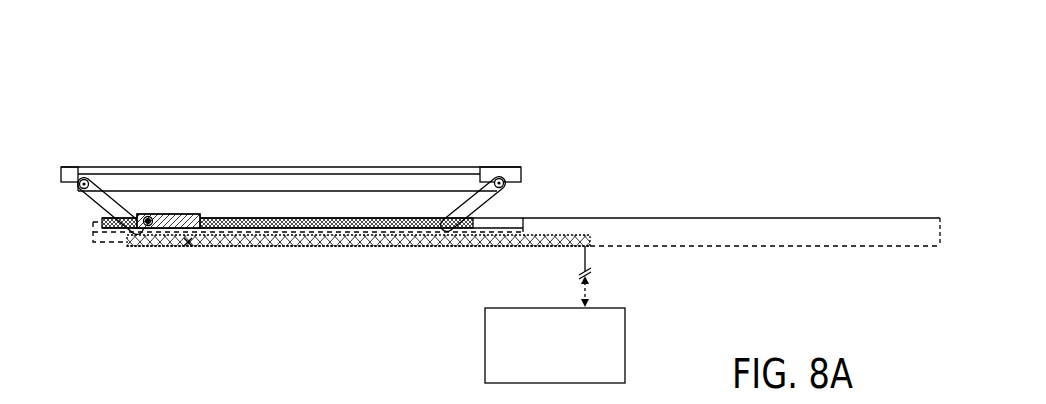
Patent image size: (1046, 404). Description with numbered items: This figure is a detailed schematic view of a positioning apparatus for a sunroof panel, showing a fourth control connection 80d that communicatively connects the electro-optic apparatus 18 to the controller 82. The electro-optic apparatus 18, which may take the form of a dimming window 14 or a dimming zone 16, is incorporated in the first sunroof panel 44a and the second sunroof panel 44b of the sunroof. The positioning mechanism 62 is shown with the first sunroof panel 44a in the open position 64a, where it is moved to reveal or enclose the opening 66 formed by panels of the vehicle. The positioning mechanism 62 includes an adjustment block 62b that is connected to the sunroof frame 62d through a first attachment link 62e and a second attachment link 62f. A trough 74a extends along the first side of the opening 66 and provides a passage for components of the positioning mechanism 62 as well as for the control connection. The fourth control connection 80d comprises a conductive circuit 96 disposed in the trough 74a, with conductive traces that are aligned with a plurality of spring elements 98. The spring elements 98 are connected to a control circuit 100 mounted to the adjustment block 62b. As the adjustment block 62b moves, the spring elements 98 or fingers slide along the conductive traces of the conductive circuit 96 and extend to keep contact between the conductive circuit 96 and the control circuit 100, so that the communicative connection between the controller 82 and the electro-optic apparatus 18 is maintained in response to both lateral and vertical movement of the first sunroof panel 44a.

The dimming window 14 is at (285, 153).
The dimming zone 16 is at (285, 153).
The electro-optic apparatus 18 is at (265, 215).
The control circuit 100 is at (165, 213).
The first attachment link 62e is at (113, 167).
The first sunroof panel 44a is at (300, 63).
The sunroof frame 62d is at (291, 118).
The second attachment link 62f is at (477, 167).
The positioning mechanism 62 is at (481, 185).
The open position 64a is at (481, 185).
The opening 66 is at (737, 232).
The spring elements 98 is at (148, 225).
The trough 74a is at (188, 242).
The adjustment block 62b is at (358, 283).
The second sunroof panel 44b is at (327, 243).
The conductive circuit 96 is at (560, 246).
The controller 82 is at (567, 372).
The fourth control connection 80d is at (481, 200).